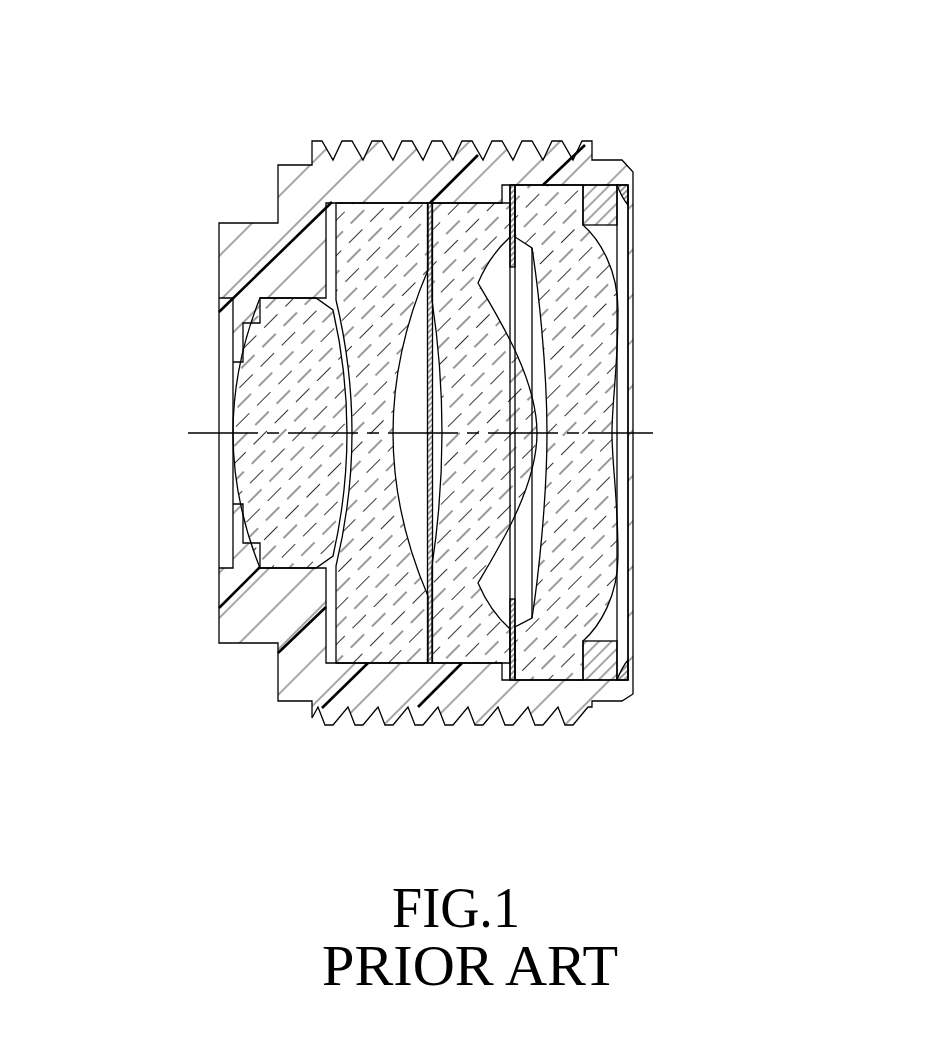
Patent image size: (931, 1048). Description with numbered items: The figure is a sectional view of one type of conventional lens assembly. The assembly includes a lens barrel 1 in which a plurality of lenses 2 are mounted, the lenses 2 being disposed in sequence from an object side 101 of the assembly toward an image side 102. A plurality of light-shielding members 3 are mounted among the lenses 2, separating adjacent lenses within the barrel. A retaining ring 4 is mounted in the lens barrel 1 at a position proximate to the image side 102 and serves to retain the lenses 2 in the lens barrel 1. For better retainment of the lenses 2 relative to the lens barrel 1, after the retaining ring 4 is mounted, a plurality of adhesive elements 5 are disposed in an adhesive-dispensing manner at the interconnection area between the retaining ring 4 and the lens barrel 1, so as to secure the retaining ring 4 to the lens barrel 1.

The lens barrel 1 is at (495, 140).
The lenses 2 is at (234, 473).
The light-shielding members 3 is at (424, 251).
The retaining ring 4 is at (620, 222).
The adhesive elements 5 is at (632, 197).
The object side 101 is at (198, 399).
The image side 102 is at (662, 404).